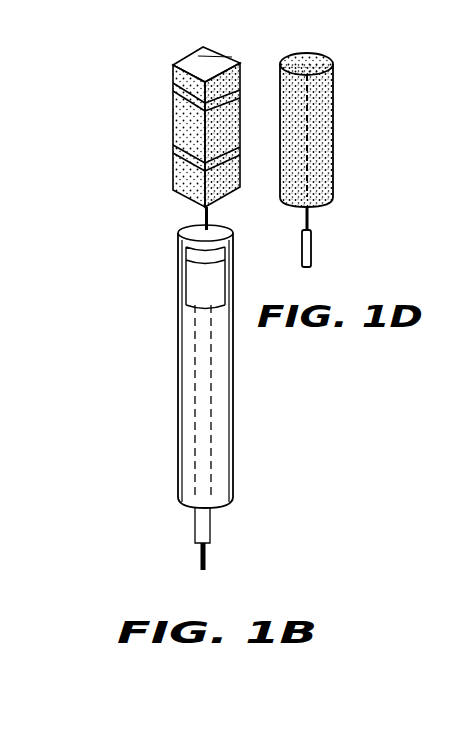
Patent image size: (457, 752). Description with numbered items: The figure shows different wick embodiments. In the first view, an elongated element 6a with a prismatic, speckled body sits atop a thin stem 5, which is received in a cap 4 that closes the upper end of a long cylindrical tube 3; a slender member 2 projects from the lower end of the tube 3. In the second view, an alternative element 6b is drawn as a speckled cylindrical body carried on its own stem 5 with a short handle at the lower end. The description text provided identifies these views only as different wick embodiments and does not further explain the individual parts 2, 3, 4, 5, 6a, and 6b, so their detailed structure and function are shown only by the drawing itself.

In FIG. 1B, the stick 2 is at (210, 530).
In FIG. 1B, the tube 3 is at (176, 386).
In FIG. 1B, the cap 4 is at (175, 224).
In FIG. 1B, the stem 5 is at (202, 212).
In FIG. 1D, the stem 5 is at (312, 250).
In FIG. 1B, the prismatic confection 6a is at (172, 105).
In FIG. 1D, the cylindrical confection 6b is at (333, 116).